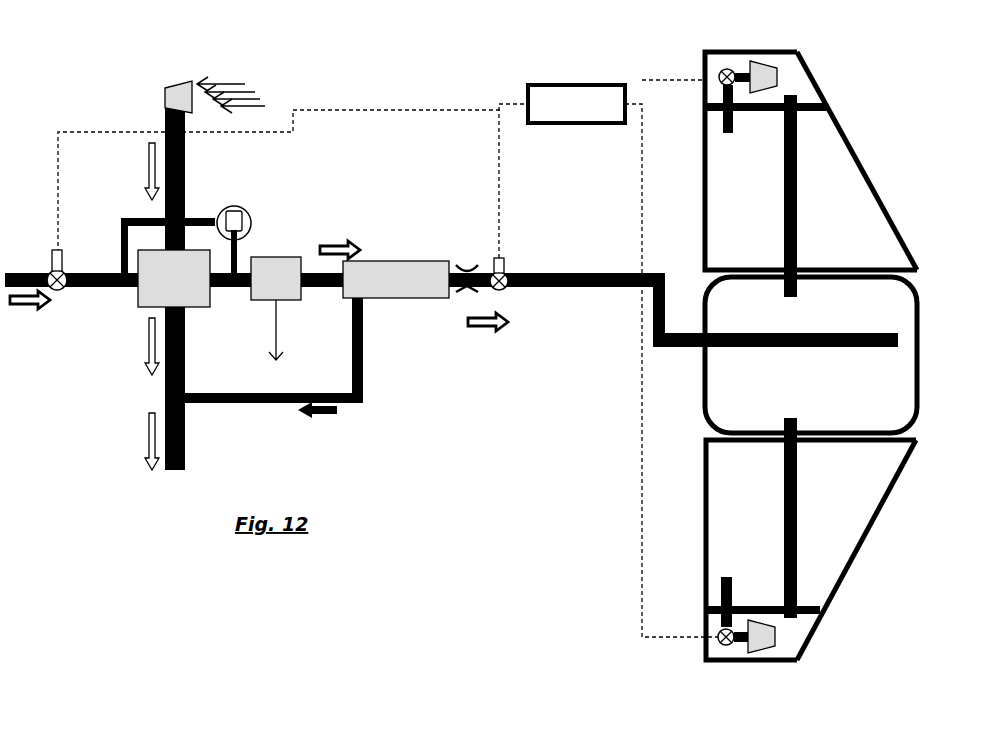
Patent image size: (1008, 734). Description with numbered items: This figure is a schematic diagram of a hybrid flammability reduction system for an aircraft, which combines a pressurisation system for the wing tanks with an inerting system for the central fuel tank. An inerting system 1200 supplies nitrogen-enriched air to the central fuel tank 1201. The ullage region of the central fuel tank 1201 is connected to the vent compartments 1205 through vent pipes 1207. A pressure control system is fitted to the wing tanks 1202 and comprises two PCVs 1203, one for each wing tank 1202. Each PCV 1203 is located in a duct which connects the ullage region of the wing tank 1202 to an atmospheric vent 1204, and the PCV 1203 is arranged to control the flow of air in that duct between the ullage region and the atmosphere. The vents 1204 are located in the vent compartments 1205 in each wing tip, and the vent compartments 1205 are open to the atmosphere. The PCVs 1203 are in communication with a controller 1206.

The inerting system 1200 is at (447, 413).
The central fuel tank 1201 is at (740, 372).
The wing tank 1202 is at (740, 152).
The PCV 1203 is at (719, 73).
The atmospheric vent 1204 is at (753, 63).
The vent compartment 1205 is at (795, 70).
The controller 1206 is at (588, 96).
The vent pipe 1207 is at (800, 243).